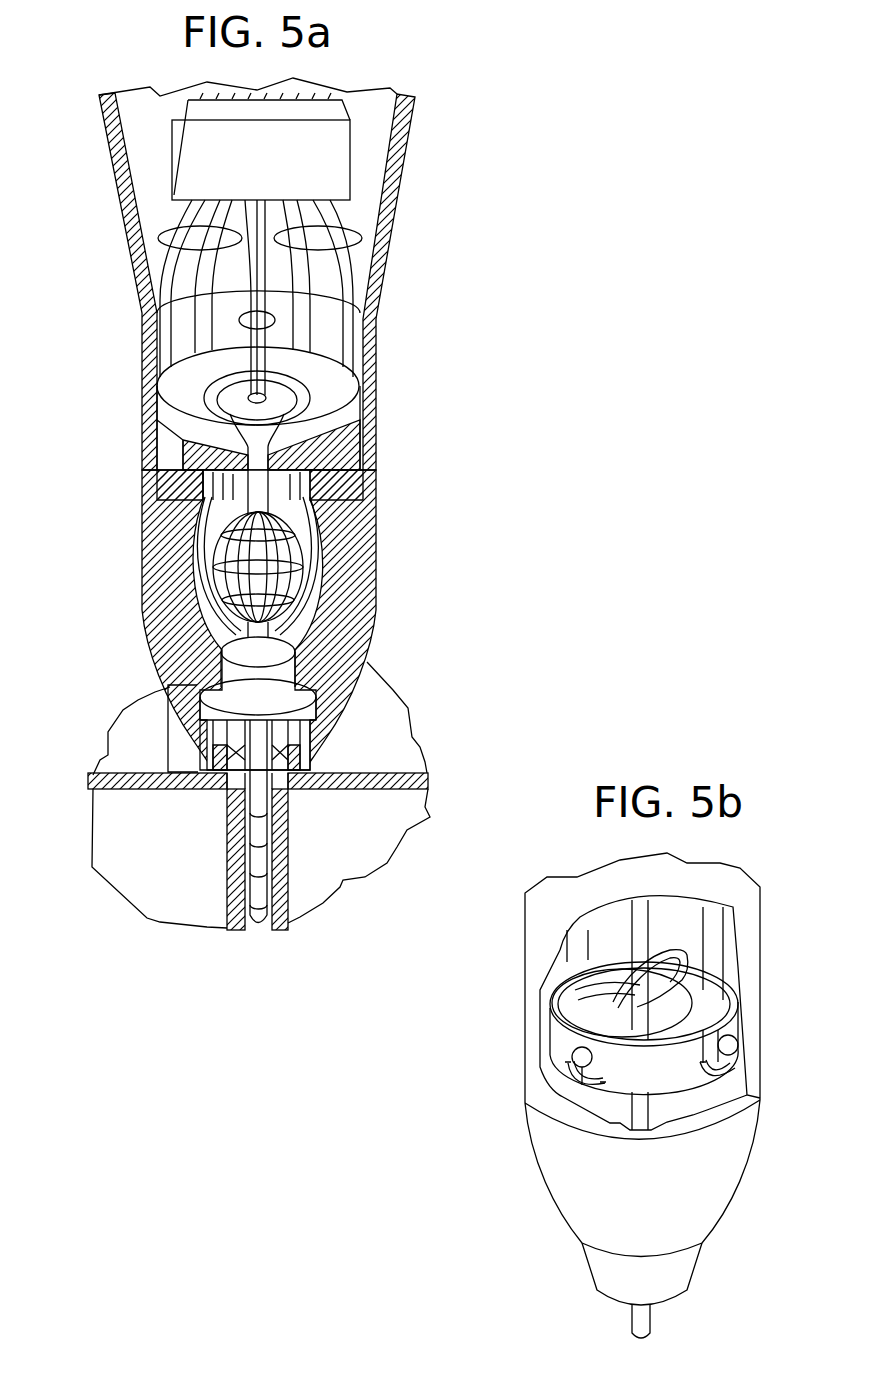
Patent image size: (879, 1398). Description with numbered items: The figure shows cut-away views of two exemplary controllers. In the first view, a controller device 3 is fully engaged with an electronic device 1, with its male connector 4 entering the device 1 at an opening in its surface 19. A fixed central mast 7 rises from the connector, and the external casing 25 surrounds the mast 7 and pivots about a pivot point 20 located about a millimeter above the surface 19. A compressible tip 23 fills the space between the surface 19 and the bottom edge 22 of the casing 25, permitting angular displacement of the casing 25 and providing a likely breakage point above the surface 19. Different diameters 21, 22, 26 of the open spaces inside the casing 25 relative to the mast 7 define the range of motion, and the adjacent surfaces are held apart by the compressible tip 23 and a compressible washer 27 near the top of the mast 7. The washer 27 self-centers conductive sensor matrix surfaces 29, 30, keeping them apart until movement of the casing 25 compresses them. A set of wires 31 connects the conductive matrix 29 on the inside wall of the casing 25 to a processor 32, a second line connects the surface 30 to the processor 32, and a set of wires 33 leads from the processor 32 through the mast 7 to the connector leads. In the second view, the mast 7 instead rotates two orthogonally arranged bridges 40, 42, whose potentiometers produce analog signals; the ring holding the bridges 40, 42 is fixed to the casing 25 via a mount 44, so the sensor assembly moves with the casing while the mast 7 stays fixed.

In FIG. 5A, the electronic device 1 is at (161, 862).
In FIG. 5A, the controller device 3 is at (410, 404).
In FIG. 5A, the male connector 4 is at (260, 920).
In FIG. 5A, the mast 7 is at (257, 655).
In FIG. 5B, the mast 7 is at (642, 933).
In FIG. 5A, the surface 19 is at (394, 783).
In FIG. 5A, the pivot point 20 is at (180, 724).
In FIG. 5A, the diameter 21 is at (205, 497).
In FIG. 5A, the bottom edge 22 is at (331, 740).
In FIG. 5A, the compressible tip 23 is at (313, 757).
In FIG. 5A, the external casing 25 is at (140, 398).
In FIG. 5B, the external casing 25 is at (750, 953).
In FIG. 5A, the diameter 26 is at (367, 613).
In FIG. 5A, the compressible washer 27 is at (320, 388).
In FIG. 5A, the conductive sensor matrix surface 29 is at (322, 557).
In FIG. 5A, the conductive sensor matrix surface 30 is at (220, 566).
In FIG. 5A, the set of wires 31 is at (165, 243).
In FIG. 5A, the processor 32 is at (316, 150).
In FIG. 5A, the set of wires 33 is at (276, 318).
In FIG. 5B, the bridge 40 is at (602, 1018).
In FIG. 5B, the bridge 42 is at (703, 1018).
In FIG. 5B, the mount 44 is at (556, 978).